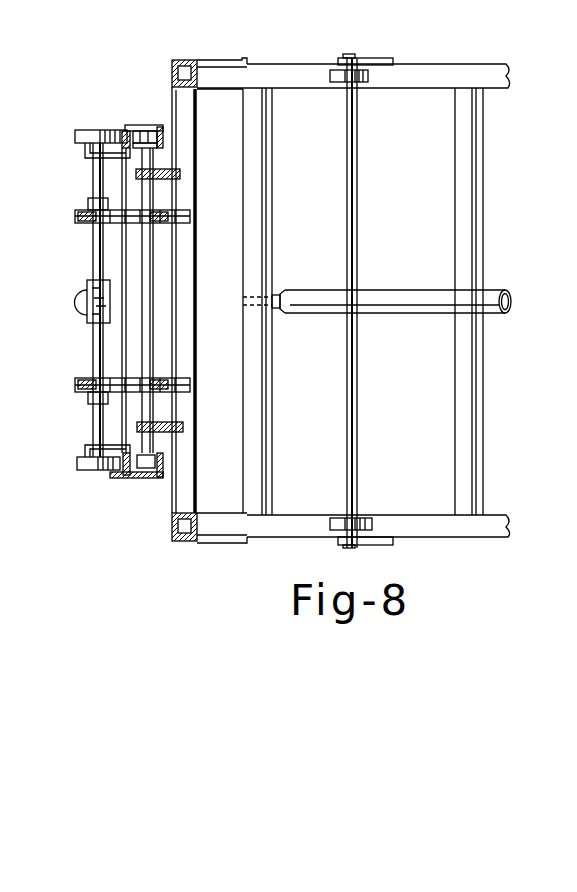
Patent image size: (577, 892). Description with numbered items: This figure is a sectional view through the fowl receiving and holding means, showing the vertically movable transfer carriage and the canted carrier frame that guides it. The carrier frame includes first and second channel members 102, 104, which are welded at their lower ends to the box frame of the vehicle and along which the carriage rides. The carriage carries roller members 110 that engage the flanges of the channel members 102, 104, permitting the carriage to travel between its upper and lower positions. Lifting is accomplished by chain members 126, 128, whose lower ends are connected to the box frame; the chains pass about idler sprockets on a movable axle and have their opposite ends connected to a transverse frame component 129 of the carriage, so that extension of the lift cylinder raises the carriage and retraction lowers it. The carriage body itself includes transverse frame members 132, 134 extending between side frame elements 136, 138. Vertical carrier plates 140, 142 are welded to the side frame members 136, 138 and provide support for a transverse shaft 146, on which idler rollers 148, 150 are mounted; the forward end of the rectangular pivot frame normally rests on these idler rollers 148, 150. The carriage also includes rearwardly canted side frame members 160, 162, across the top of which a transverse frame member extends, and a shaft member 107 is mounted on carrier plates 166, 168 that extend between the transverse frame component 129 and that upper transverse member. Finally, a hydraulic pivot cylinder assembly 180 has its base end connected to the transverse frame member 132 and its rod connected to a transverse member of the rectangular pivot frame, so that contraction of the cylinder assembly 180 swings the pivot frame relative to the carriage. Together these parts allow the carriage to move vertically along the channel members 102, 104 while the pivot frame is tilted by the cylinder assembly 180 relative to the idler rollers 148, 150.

The first channel member 102 is at (157, 126).
The second channel member 104 is at (137, 477).
The shaft member 107 is at (143, 259).
The roller members 110 is at (135, 125).
The chain member 126 is at (132, 224).
The chain member 128 is at (132, 377).
The transverse frame component 129 is at (186, 120).
The transverse frame member 132 is at (267, 418).
The transverse frame member 134 is at (478, 433).
The side frame element 136 is at (486, 68).
The side frame element 138 is at (497, 540).
The vertical carrier plate 140 is at (367, 58).
The vertical carrier plate 142 is at (380, 545).
The transverse shaft 146 is at (360, 210).
The idler roller 148 is at (371, 73).
The idler roller 150 is at (372, 518).
The rearwardly canted side frame member 160 is at (172, 65).
The rearwardly canted side frame member 162 is at (172, 527).
The carrier plate 166 is at (182, 174).
The carrier plate 168 is at (184, 427).
The hydraulic pivot cylinder assembly 180 is at (388, 312).